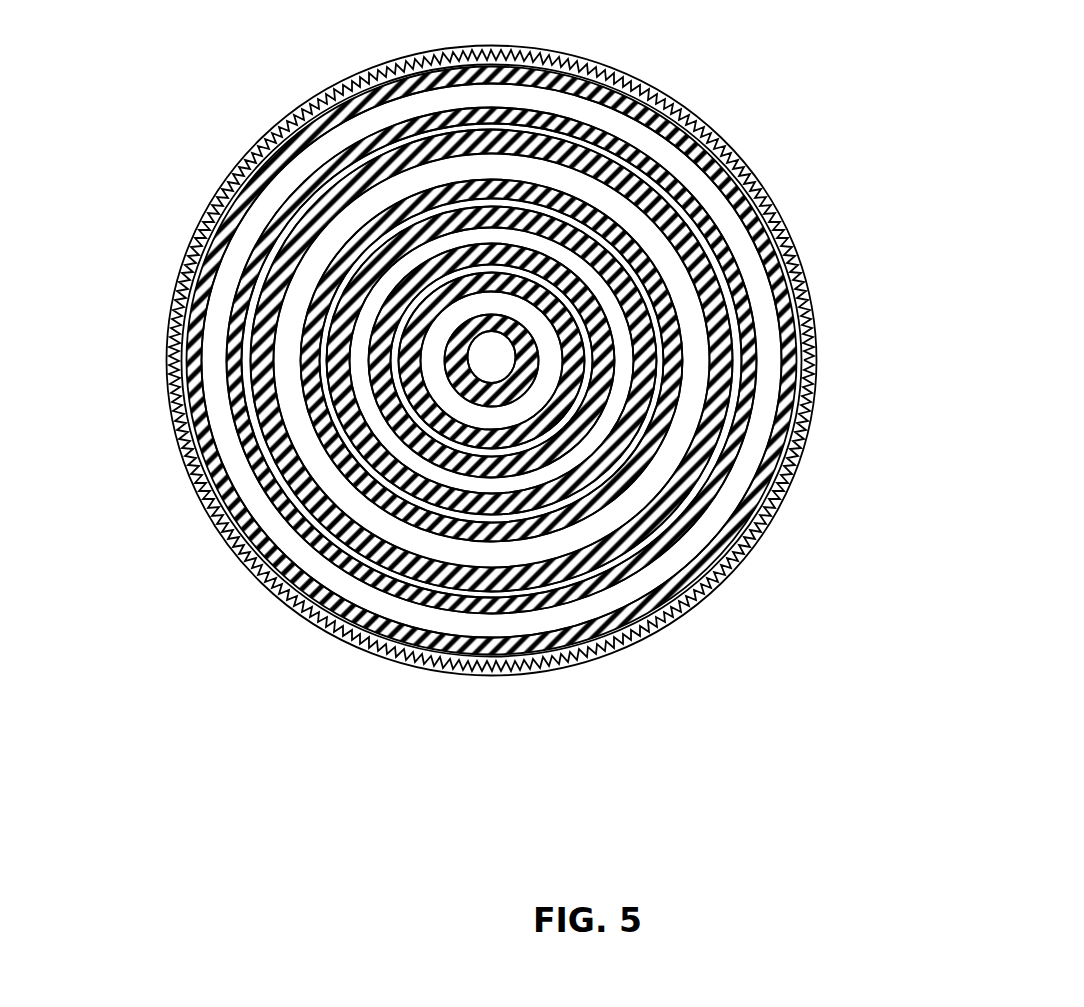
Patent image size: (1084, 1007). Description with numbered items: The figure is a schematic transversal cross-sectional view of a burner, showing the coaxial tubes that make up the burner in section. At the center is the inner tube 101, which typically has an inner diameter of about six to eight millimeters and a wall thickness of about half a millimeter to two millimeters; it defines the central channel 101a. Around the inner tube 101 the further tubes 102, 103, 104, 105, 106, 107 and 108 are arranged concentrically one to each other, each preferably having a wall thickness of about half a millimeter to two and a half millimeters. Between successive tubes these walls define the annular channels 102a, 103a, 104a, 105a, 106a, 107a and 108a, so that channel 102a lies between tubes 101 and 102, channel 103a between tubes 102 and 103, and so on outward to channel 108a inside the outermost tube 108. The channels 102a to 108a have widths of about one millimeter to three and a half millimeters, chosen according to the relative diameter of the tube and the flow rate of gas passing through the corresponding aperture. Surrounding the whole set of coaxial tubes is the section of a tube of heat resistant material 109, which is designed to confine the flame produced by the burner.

The inner tube 101 is at (520, 378).
The channel 101a is at (500, 368).
The tube 102 is at (548, 420).
The channel 102a is at (438, 383).
The tube 103 is at (605, 400).
The channel 103a is at (390, 385).
The tube 104 is at (640, 405).
The channel 104a is at (372, 403).
The tube 105 is at (680, 356).
The channel 105a is at (330, 410).
The tube 106 is at (715, 290).
The channel 106a is at (290, 355).
The tube 107 is at (730, 237).
The channel 107a is at (290, 225).
The tube 108 is at (715, 140).
The channel 108a is at (300, 170).
The tube of heat resistant material 109 is at (683, 108).